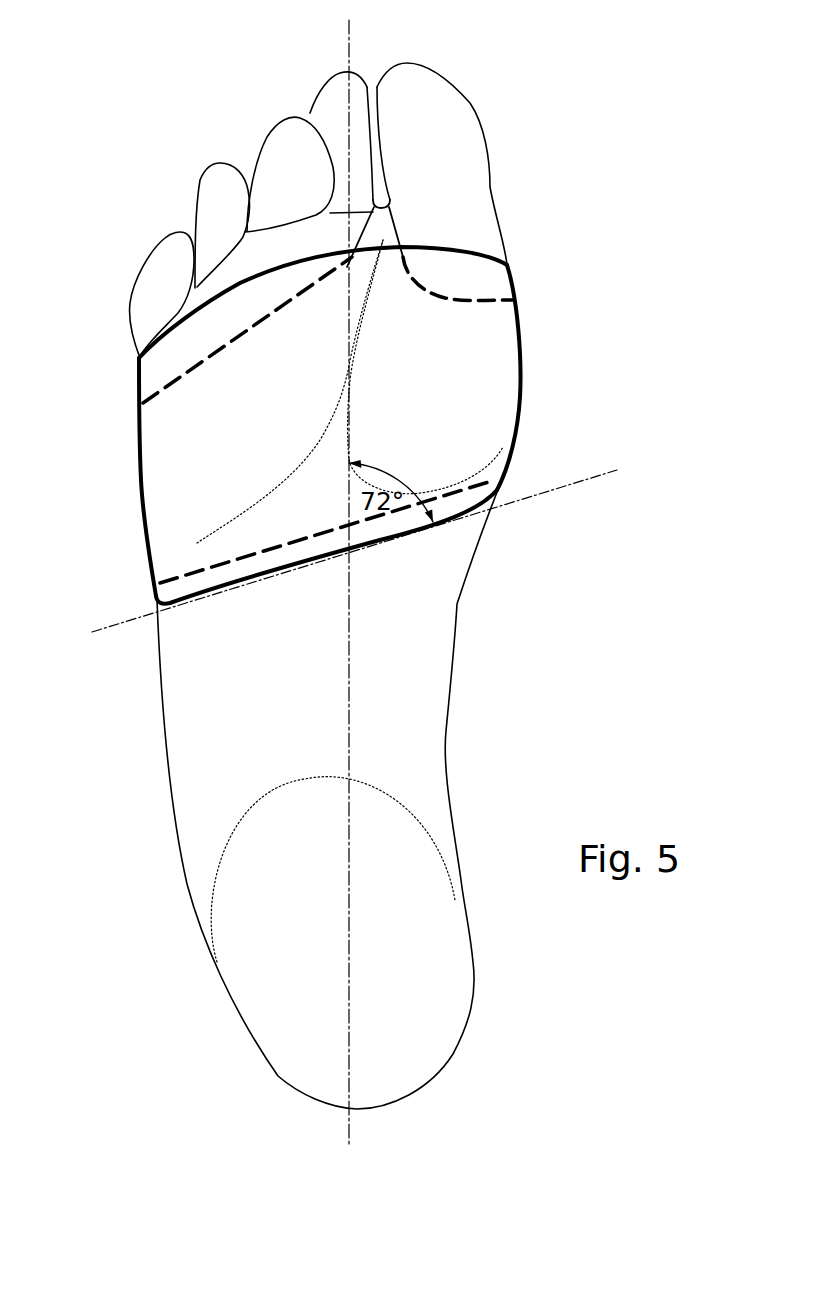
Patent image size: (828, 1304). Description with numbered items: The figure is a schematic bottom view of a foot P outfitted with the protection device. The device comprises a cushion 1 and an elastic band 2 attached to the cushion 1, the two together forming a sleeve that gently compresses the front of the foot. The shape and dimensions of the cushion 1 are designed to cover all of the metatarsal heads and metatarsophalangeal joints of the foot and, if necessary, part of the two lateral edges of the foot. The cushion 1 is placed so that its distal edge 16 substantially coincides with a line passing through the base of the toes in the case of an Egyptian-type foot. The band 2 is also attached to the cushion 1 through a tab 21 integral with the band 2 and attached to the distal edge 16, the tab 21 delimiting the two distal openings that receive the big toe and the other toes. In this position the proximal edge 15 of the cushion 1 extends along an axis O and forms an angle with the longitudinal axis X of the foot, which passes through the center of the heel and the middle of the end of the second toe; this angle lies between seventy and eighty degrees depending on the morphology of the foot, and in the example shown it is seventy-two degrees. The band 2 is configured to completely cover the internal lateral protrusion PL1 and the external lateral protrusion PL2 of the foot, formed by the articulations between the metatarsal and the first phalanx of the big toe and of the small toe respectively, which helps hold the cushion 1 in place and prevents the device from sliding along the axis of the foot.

The cushion 1 is at (517, 407).
The elastic band 2 is at (473, 306).
The proximal edge 15 is at (460, 520).
The distal longitudinal edge 16 is at (272, 263).
The tab 21 is at (388, 227).
The foot P is at (624, 167).
The longitudinal axis of the foot X is at (348, 42).
The axis O is at (606, 472).
The internal lateral protrusion PL1 is at (533, 343).
The external lateral protrusion PL2 is at (125, 498).